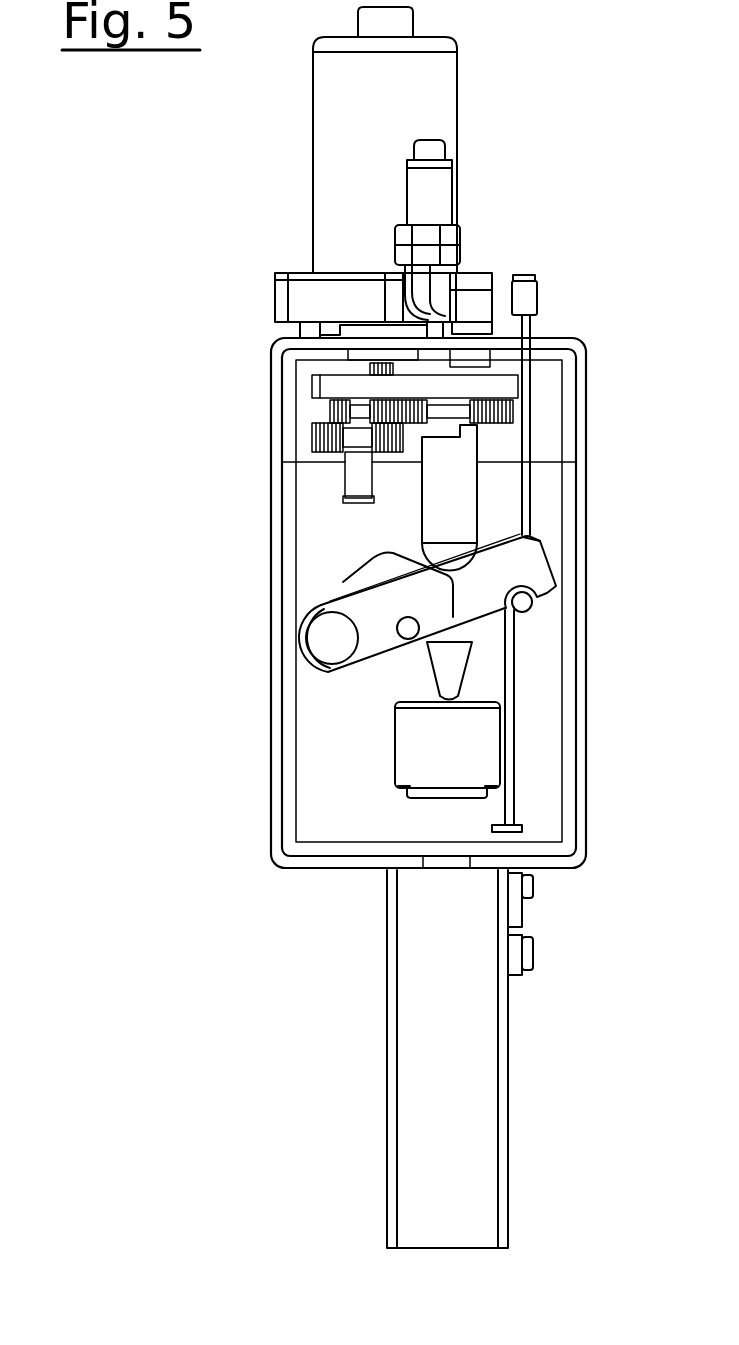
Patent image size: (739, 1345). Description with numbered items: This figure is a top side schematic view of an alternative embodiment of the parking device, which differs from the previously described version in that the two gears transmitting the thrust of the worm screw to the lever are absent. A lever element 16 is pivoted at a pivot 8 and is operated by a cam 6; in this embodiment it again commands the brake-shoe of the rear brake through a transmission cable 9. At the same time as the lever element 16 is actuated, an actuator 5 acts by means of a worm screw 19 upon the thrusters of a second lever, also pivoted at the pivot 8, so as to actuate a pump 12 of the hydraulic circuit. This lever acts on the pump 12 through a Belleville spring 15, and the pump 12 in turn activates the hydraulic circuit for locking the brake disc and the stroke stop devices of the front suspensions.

The actuator 5 is at (327, 157).
The cam 6 is at (347, 582).
The pivot 8 is at (407, 627).
The transmission cable 9 is at (528, 327).
The pump 12 is at (453, 1040).
The Belleville spring 15 is at (425, 748).
The lever element 16 is at (517, 568).
The worm screw 19 is at (450, 498).